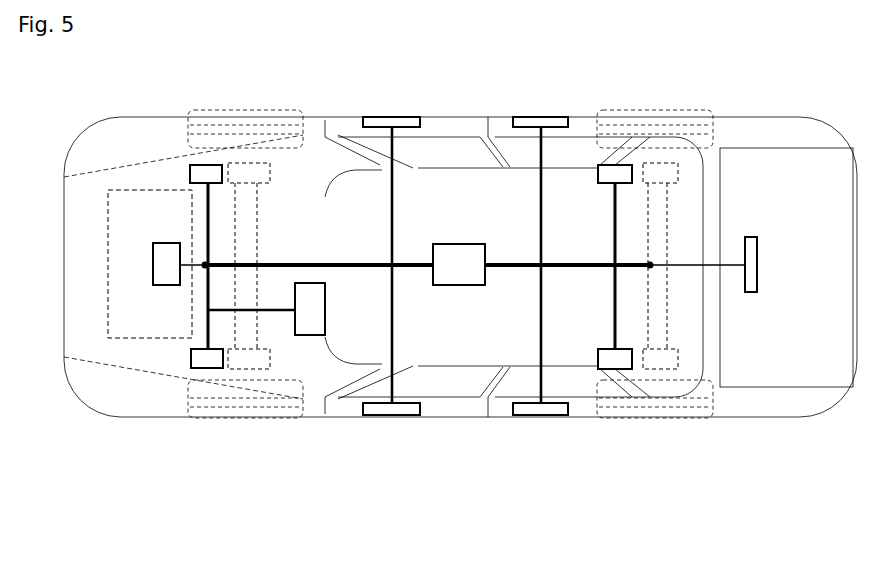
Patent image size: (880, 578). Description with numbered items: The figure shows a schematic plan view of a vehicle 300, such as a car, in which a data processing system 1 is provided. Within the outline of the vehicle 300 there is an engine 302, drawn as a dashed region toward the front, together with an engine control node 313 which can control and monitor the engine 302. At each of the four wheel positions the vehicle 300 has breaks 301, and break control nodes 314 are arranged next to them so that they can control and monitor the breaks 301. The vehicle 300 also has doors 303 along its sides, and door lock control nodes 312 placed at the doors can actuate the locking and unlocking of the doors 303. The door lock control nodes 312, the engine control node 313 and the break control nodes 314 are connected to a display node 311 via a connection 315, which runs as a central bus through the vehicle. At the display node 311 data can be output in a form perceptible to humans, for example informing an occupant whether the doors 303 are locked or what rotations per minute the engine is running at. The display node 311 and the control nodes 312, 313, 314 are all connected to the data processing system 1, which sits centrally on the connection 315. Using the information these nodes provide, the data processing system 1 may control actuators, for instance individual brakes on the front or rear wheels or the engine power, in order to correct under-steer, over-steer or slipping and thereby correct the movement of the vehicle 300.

The data processing system 1 is at (466, 276).
The vehicle 300 is at (117, 385).
The breaks 301 is at (245, 172).
The engine 302 is at (168, 216).
The doors 303 is at (455, 122).
The display node 311 is at (310, 310).
The door lock control nodes 312 is at (393, 122).
The engine control node 313 is at (165, 268).
The break control nodes 314 is at (208, 176).
The connection 315 is at (563, 268).